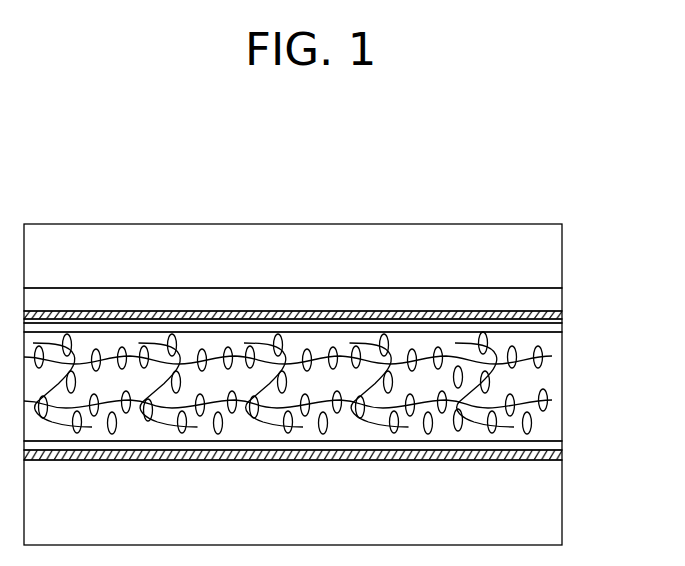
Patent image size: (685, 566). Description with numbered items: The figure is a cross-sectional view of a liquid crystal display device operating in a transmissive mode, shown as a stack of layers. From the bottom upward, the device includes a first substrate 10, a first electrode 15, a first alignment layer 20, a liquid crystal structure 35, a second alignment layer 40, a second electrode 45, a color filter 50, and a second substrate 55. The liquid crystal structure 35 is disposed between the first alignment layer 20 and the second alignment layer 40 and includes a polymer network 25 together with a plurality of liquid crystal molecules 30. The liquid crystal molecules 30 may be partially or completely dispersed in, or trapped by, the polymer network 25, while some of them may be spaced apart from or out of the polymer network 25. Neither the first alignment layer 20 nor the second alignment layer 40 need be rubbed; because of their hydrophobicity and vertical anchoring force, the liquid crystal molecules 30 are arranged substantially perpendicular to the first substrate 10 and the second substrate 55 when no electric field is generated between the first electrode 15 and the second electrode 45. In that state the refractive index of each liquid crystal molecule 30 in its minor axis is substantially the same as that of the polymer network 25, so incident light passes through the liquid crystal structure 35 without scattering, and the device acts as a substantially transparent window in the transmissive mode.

The first substrate 10 is at (555, 502).
The first electrode 15 is at (558, 455).
The first alignment layer 20 is at (558, 447).
The polymer network 25 is at (493, 378).
The liquid crystal molecules 30 is at (538, 351).
The liquid crystal structure 35 is at (635, 345).
The second alignment layer 40 is at (557, 325).
The second electrode 45 is at (557, 317).
The color filter 50 is at (557, 297).
The second substrate 55 is at (556, 243).